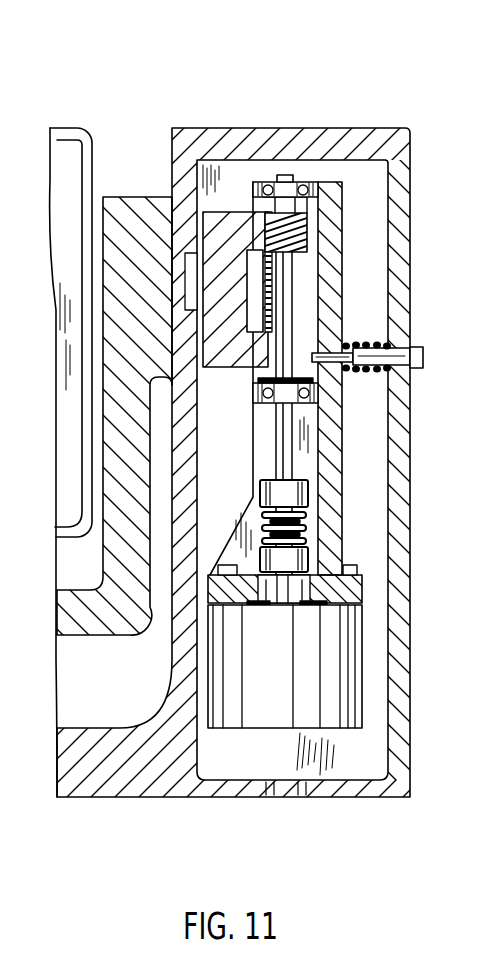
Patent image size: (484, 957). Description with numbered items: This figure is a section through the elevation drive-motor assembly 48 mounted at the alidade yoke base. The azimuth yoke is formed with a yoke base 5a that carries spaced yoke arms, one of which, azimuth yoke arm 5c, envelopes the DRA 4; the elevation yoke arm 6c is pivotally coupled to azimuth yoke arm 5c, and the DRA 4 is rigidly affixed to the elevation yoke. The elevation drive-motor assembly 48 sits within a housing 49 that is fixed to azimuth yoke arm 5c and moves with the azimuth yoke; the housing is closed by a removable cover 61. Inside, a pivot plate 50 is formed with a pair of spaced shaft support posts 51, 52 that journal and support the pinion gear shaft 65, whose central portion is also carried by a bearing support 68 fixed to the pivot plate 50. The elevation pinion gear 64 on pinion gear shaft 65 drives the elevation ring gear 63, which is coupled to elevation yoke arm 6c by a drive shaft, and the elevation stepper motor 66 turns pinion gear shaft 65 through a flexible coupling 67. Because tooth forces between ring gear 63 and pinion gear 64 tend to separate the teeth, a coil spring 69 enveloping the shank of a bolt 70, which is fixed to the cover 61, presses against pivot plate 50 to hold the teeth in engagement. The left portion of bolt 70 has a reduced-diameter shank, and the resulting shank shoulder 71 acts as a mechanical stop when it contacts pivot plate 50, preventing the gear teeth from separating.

The DRA 4 is at (68, 163).
The yoke base 5a is at (115, 777).
The azimuth yoke arm 5c is at (183, 642).
The elevation yoke arm 6c is at (133, 217).
The elevation drive-motor assembly 48 is at (365, 212).
The housing 49 is at (302, 790).
The pivot plate 50 is at (332, 450).
The shaft support post 51 is at (318, 183).
The shaft support post 52 is at (345, 590).
The removable cover 61 is at (397, 688).
The elevation ring gear 63 is at (233, 220).
The elevation pinion gear 64 is at (317, 223).
The pinion gear shaft 65 is at (283, 282).
The elevation stepper motor 66 is at (330, 705).
The flexible coupling 67 is at (305, 526).
The bearing support 68 is at (318, 388).
The coil spring 69 is at (377, 345).
The bolt 70 is at (397, 363).
The shank shoulder 71 is at (348, 345).